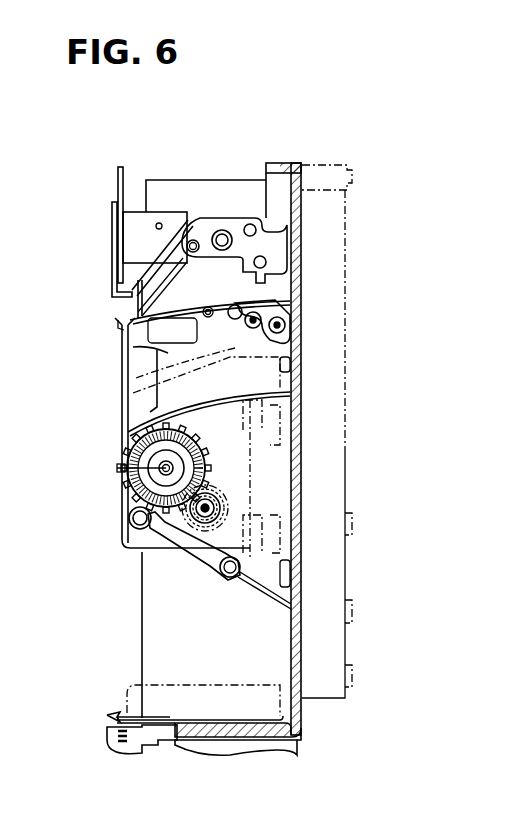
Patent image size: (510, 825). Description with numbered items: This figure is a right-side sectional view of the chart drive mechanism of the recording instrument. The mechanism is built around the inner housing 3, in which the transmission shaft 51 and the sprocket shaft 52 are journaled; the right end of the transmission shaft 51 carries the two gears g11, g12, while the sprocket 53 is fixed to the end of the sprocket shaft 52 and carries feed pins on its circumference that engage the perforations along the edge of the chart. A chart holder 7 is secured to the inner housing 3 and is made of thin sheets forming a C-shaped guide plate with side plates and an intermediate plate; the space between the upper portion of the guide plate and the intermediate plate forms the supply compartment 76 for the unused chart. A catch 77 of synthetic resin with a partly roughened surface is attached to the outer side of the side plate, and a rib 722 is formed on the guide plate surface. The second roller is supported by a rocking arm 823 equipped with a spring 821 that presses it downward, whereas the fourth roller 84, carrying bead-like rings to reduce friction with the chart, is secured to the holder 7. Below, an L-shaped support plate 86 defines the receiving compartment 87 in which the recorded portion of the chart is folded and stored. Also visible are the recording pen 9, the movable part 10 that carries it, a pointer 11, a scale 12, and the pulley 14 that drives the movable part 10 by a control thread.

The inner housing 3 is at (303, 222).
The holder 7 is at (121, 387).
The recording pen 9 is at (136, 305).
The movable part 10 is at (242, 218).
The pointer 11 is at (111, 227).
The scale 12 is at (120, 177).
The pulley 14 is at (300, 448).
The transmission shaft 51 is at (230, 457).
The sprocket shaft 52 is at (116, 468).
The sprocket 53 is at (122, 463).
The supply compartment 76 is at (167, 352).
The catch 77 is at (118, 323).
The fourth roller 84 is at (130, 516).
The L-shaped support plate 86 is at (289, 652).
The receiving compartment 87 is at (198, 630).
The rib 722 is at (150, 523).
The spring 821 is at (293, 297).
The rocking arm 823 is at (295, 317).
The gear g11 is at (232, 520).
The gear g12 is at (232, 502).